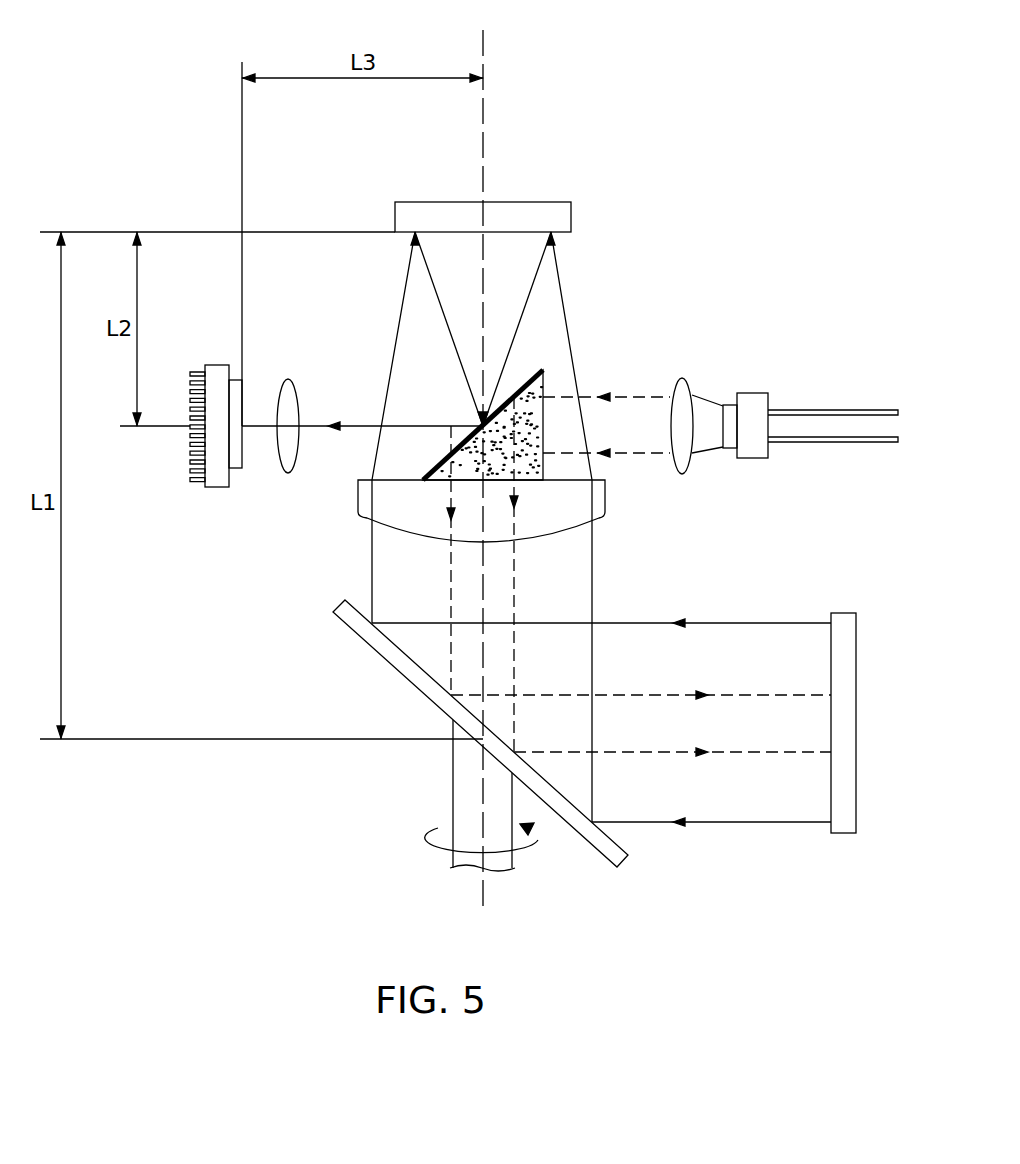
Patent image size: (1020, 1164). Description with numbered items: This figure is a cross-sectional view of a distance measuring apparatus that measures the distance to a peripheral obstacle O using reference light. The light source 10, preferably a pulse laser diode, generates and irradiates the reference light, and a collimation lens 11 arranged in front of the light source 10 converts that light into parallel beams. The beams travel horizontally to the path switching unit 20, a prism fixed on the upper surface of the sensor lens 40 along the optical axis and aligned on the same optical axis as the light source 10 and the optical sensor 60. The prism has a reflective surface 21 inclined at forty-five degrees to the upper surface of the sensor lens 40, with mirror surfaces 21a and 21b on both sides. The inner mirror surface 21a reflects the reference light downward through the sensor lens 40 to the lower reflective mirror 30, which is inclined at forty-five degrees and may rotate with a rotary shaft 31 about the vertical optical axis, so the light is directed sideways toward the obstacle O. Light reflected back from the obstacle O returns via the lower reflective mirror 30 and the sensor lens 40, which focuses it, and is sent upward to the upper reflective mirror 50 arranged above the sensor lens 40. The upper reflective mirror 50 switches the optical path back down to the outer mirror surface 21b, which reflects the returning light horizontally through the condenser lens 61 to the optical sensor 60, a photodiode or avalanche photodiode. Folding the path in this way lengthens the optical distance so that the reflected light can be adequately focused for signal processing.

The light source 10 is at (747, 400).
The collimation lens 11 is at (684, 381).
The path switching unit 20 is at (530, 440).
The reflective surface 21 is at (608, 275).
The inner mirror surface 21a is at (513, 402).
The outer mirror surface 21b is at (527, 380).
The lower reflective mirror 30 is at (358, 628).
The rotary shaft 31 is at (469, 800).
The sensor lens 40 is at (596, 498).
The upper reflective mirror 50 is at (543, 208).
The optical sensor 60 is at (217, 365).
The condenser lens 61 is at (295, 379).
The peripheral obstacle O is at (843, 823).